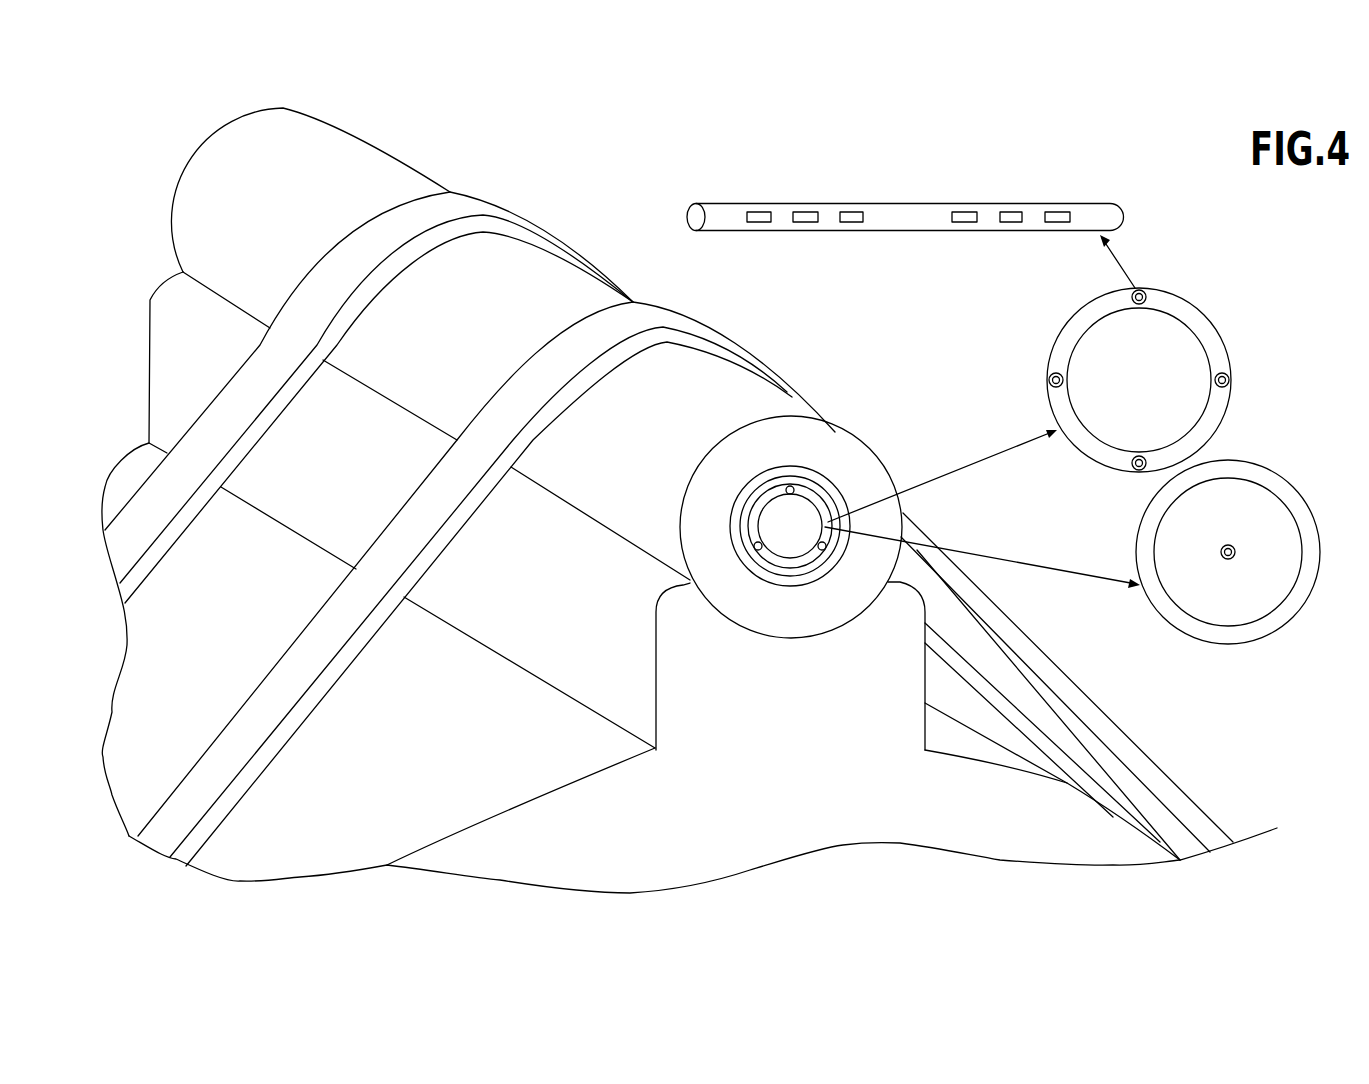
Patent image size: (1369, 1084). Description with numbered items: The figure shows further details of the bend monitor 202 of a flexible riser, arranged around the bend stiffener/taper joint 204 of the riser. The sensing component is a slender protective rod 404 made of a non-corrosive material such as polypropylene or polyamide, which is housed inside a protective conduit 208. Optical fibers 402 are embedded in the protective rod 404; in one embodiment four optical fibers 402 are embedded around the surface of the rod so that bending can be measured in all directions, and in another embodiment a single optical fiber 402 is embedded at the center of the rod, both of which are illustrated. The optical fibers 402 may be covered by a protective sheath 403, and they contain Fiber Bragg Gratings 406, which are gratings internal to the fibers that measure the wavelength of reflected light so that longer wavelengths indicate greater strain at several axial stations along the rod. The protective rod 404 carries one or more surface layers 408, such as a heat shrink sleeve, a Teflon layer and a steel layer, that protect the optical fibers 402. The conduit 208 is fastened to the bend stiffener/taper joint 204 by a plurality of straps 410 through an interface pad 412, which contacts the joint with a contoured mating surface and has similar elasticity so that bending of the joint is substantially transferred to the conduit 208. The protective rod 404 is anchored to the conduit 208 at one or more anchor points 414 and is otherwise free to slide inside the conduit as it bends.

The bend monitor 202 is at (507, 205).
The bend stiffener/taper joint 204 is at (853, 800).
The conduit 208 is at (777, 408).
The optical fibers 402 is at (828, 552).
The protective sheath 403 is at (1232, 365).
The protective rod 404 is at (797, 520).
The Fiber Bragg Gratings 406 is at (756, 212).
The surface layers 408 is at (783, 577).
The straps 410 is at (670, 323).
The interface pad 412 is at (703, 712).
The anchor points 414 is at (748, 567).